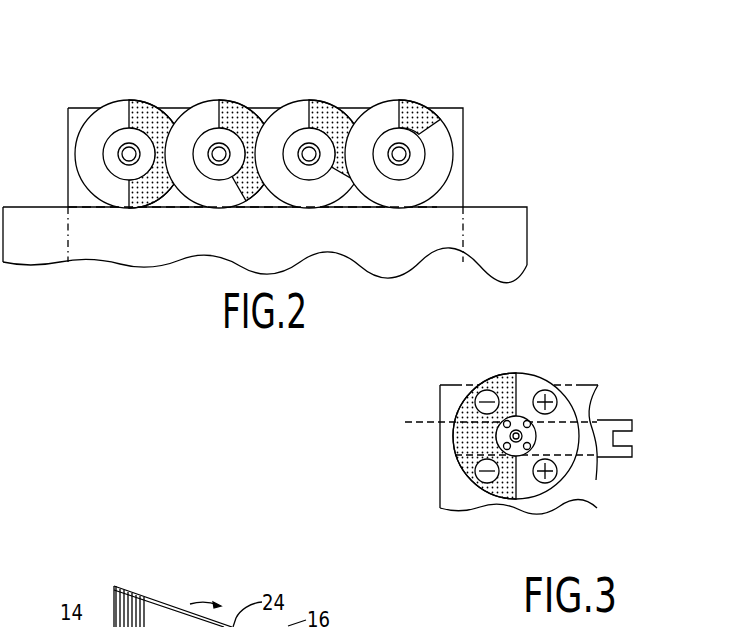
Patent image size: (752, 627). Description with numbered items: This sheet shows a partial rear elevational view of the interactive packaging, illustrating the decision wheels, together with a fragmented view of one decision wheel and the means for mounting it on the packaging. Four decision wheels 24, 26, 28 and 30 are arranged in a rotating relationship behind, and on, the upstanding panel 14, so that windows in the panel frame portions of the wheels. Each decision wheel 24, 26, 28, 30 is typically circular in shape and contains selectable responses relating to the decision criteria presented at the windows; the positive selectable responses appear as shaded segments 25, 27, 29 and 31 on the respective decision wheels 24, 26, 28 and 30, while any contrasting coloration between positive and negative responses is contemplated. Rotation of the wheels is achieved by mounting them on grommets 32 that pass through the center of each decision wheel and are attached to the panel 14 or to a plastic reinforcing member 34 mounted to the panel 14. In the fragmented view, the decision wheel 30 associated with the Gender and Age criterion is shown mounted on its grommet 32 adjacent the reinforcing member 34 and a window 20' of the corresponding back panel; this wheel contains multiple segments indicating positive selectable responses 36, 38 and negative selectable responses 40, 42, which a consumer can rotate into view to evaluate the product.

In FIG. 2, the upstanding panel 14 is at (463, 205).
In FIG. 3, the upstanding panel 14 is at (568, 497).
In FIG. 3, the window 20' is at (615, 390).
In FIG. 2, the decision wheel 24 is at (435, 133).
In FIG. 2, the shaded segment 25 is at (412, 116).
In FIG. 2, the decision wheel 26 is at (295, 113).
In FIG. 2, the shaded segment 27 is at (338, 118).
In FIG. 2, the decision wheel 28 is at (208, 115).
In FIG. 2, the shaded segment 29 is at (245, 111).
In FIG. 2, the decision wheel 30 is at (112, 115).
In FIG. 3, the decision wheel 30 is at (492, 377).
In FIG. 2, the shaded segment 31 is at (147, 110).
In FIG. 2, the grommet 32 is at (403, 157).
In FIG. 3, the grommet 32 is at (518, 437).
In FIG. 3, the plastic reinforcing member 34 is at (601, 426).
In FIG. 3, the positive selectable response segment 36 is at (547, 393).
In FIG. 3, the positive selectable response segment 38 is at (542, 481).
In FIG. 3, the negative selectable response segment 40 is at (487, 479).
In FIG. 3, the negative selectable response segment 42 is at (486, 406).